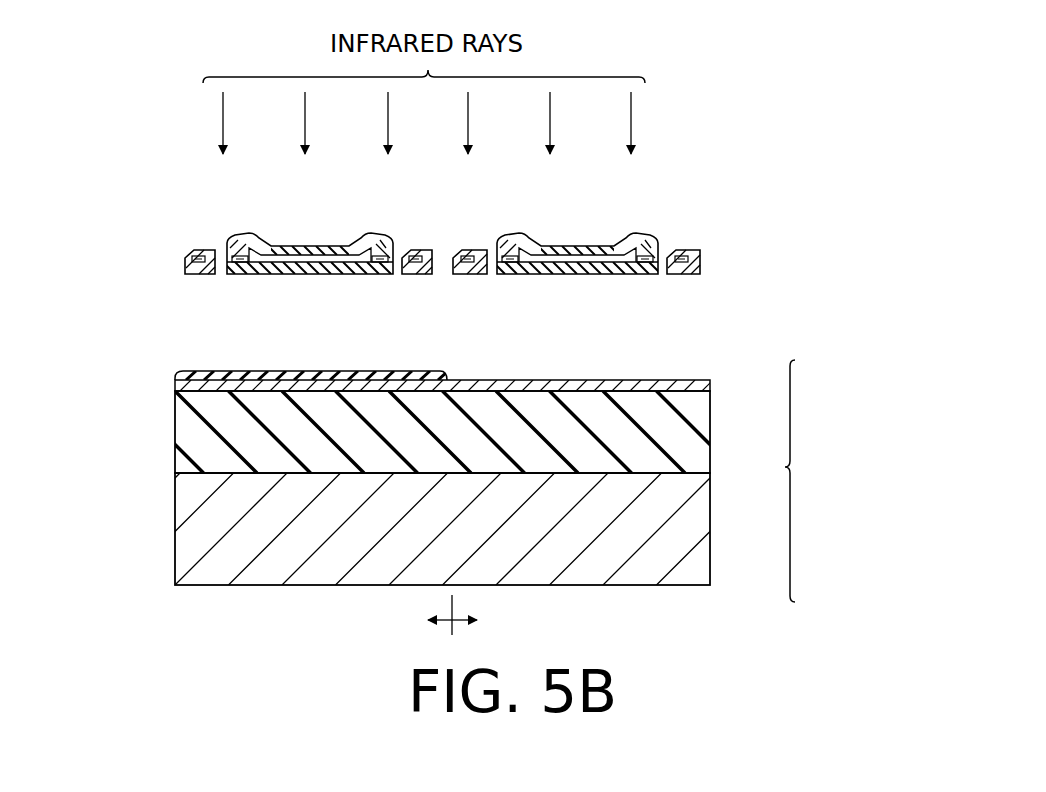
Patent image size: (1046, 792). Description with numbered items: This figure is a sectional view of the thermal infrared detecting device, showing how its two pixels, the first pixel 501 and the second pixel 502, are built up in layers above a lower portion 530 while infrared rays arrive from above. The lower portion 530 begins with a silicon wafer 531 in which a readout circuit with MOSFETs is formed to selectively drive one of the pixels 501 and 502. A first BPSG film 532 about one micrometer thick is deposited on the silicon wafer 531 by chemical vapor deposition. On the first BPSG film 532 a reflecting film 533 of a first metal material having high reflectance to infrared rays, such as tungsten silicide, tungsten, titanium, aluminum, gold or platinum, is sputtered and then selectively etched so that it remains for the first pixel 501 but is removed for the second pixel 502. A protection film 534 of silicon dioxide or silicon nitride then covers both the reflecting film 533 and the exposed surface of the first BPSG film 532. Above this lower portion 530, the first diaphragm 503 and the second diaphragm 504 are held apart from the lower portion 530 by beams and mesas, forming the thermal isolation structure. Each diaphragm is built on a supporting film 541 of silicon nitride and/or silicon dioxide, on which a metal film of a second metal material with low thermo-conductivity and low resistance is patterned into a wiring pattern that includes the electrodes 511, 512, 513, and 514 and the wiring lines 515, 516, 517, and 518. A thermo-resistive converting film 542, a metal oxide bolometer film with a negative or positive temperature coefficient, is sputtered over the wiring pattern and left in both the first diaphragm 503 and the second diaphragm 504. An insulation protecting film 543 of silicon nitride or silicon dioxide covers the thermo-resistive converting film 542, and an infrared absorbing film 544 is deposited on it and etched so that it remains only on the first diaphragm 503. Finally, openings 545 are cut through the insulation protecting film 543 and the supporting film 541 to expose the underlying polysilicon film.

The first pixel 501 is at (408, 621).
The second pixel 502 is at (492, 614).
The first diaphragm 503 is at (303, 248).
The second diaphragm 504 is at (577, 244).
The electrode 511 is at (260, 246).
The electrode 512 is at (360, 246).
The electrode 513 is at (522, 245).
The electrode 514 is at (633, 246).
The wiring line 515 is at (196, 248).
The wiring line 516 is at (417, 250).
The wiring line 517 is at (497, 248).
The wiring line 518 is at (698, 252).
The lower portion 530 is at (461, 462).
The silicon wafer 531 is at (692, 562).
The first BPSG film 532 is at (692, 413).
The reflecting film 533 is at (413, 383).
The protection film 534 is at (505, 381).
The supporting film 541 is at (158, 227).
The thermo-resistive converting film 542 is at (395, 255).
The insulation protecting film 543 is at (196, 253).
The infrared absorbing film 544 is at (300, 246).
The openings 545 is at (232, 254).